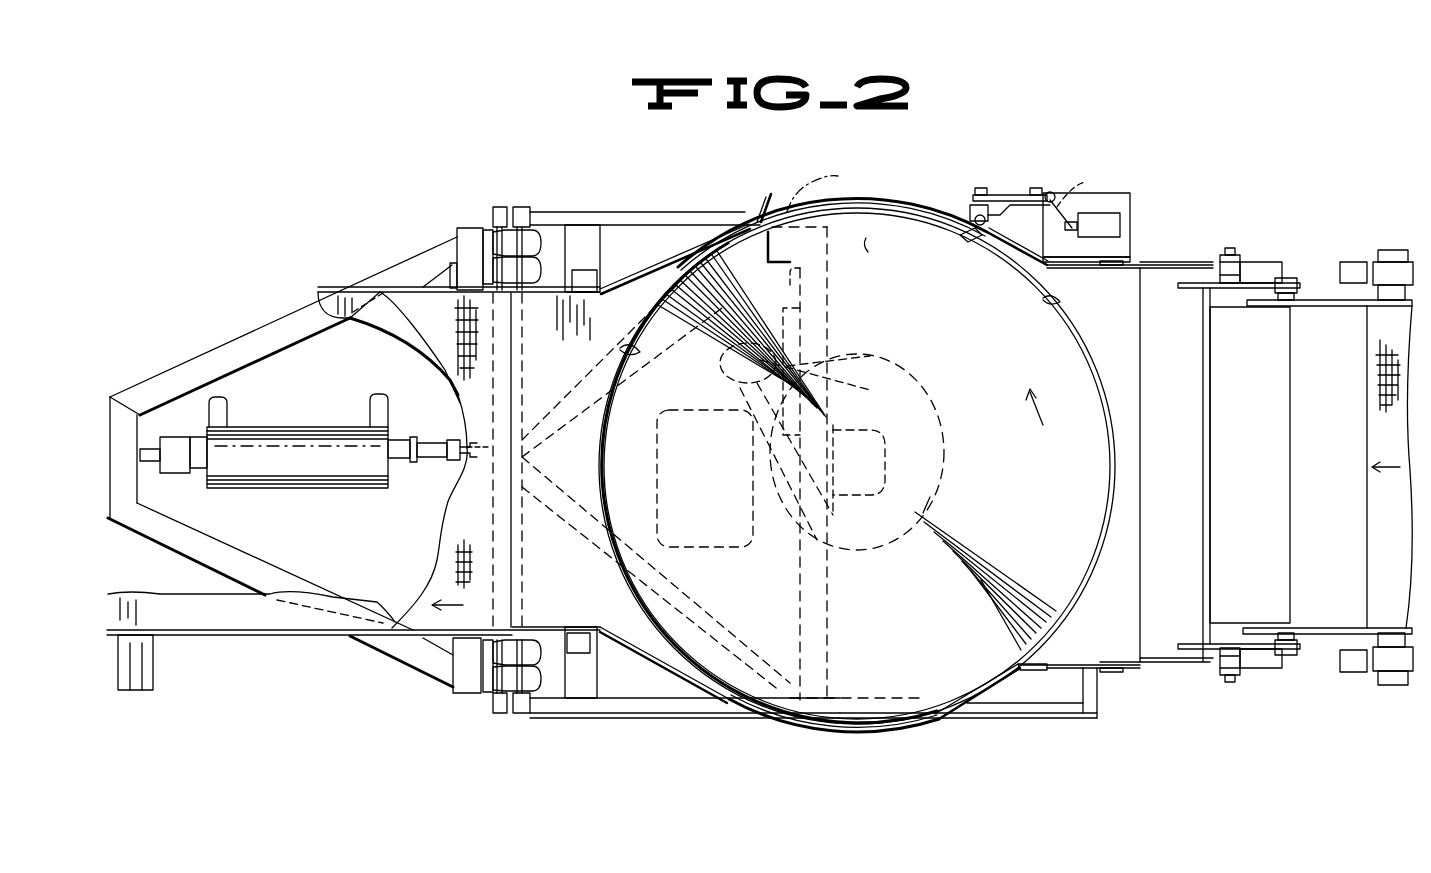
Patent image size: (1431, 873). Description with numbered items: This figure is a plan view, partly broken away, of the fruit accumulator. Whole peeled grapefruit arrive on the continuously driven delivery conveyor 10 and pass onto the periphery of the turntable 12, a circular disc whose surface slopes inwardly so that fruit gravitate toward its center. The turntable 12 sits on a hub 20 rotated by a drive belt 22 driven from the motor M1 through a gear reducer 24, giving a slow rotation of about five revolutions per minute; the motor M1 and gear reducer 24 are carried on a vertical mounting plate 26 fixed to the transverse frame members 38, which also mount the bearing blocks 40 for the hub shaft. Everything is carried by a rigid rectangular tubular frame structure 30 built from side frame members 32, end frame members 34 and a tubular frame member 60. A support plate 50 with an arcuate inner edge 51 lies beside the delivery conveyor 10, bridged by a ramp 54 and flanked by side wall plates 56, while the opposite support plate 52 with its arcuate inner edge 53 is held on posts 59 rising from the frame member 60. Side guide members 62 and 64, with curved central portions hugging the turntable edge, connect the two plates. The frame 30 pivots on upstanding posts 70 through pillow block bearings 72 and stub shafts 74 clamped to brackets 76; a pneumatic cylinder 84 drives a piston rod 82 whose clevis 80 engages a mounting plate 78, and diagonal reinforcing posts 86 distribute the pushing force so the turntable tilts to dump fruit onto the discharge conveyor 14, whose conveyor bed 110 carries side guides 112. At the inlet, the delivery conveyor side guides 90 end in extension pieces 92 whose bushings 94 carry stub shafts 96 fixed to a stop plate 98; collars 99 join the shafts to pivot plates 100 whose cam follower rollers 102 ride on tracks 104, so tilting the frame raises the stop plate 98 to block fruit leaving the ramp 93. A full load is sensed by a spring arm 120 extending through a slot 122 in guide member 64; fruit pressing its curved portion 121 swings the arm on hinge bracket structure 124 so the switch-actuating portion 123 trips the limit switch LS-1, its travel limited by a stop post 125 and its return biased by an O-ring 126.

The delivery conveyor 10 is at (1372, 343).
The turntable 12 is at (1038, 469).
The discharge conveyor 14 is at (440, 544).
The hub 20 is at (897, 391).
The drive belt 22 is at (835, 370).
The gear reducer 24 is at (692, 461).
The motor M1 is at (657, 433).
The mounting plate 26 is at (800, 270).
The tubular frame structure 30 is at (707, 714).
The side frame members 32 is at (678, 218).
The end frame members 34 is at (1085, 690).
The frame members 38 is at (830, 292).
The bearing blocks 40 is at (880, 440).
The support plate 50 is at (1131, 334).
The inner edge 51 is at (1062, 300).
The support plate 52 is at (570, 384).
The inner edge 53 is at (620, 350).
The ramp 54 is at (1183, 422).
The side wall plates 56 is at (1155, 266).
The posts 59 is at (590, 275).
The tubular frame member 60 is at (601, 237).
The side guide member 62 is at (890, 727).
The side guide member 64 is at (725, 216).
The upstanding posts 70 is at (460, 238).
The pillow block bearing 72 is at (542, 243).
The stub shaft 74 is at (520, 207).
The bracket 76 is at (495, 212).
The mounting plate 78 is at (480, 478).
The clevis 80 is at (432, 447).
The piston rod 82 is at (400, 460).
The pneumatic cylinder 84 is at (288, 429).
The reinforcing posts 86 is at (575, 478).
The side guides 90 is at (1385, 300).
The extension piece 92 is at (1315, 306).
The ramp 93 is at (1358, 405).
The bushing 94 is at (1275, 306).
The stub shaft 96 is at (1285, 278).
The stop plate 98 is at (1262, 409).
The collar 99 is at (1295, 296).
The pivot plates 100 is at (1205, 286).
The cam follower rollers 102 is at (1222, 256).
The tracks 104 is at (1255, 262).
The conveyor bed 110 is at (370, 594).
The side guides 112 is at (338, 287).
The spring arm 120 is at (837, 222).
The curved portion 121 is at (889, 243).
The slot 122 is at (985, 238).
The switch-actuating portion 123 is at (1075, 195).
The hinge bracket structure 124 is at (972, 210).
The stop post 125 is at (1052, 192).
The O-ring 126 is at (1003, 194).
The limit switch LS-1 is at (1131, 213).